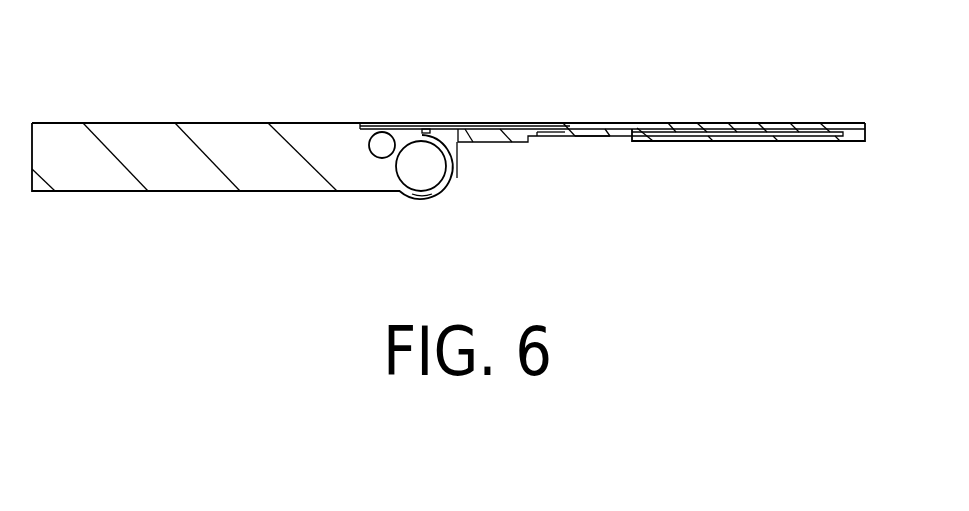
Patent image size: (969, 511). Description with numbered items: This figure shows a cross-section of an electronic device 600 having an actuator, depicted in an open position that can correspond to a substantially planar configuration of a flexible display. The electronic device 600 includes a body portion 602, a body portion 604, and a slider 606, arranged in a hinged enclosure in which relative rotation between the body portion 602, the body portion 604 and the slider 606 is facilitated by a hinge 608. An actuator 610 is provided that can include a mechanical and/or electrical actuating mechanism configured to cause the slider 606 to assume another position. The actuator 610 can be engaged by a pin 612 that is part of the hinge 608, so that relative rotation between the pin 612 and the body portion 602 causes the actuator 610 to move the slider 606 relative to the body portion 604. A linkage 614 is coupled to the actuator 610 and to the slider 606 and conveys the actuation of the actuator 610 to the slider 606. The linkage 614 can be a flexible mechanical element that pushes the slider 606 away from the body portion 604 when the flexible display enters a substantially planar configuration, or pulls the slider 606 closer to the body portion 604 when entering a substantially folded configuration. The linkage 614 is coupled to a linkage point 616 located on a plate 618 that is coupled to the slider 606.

The electronic device 600 is at (860, 21).
The body portion 602 is at (207, 122).
The body portion 604 is at (428, 122).
The slider 606 is at (712, 122).
The hinge 608 is at (479, 216).
The actuator 610 is at (383, 157).
The pin 612 is at (410, 178).
The linkage 614 is at (482, 122).
The linkage point 616 is at (577, 122).
The plate 618 is at (622, 122).